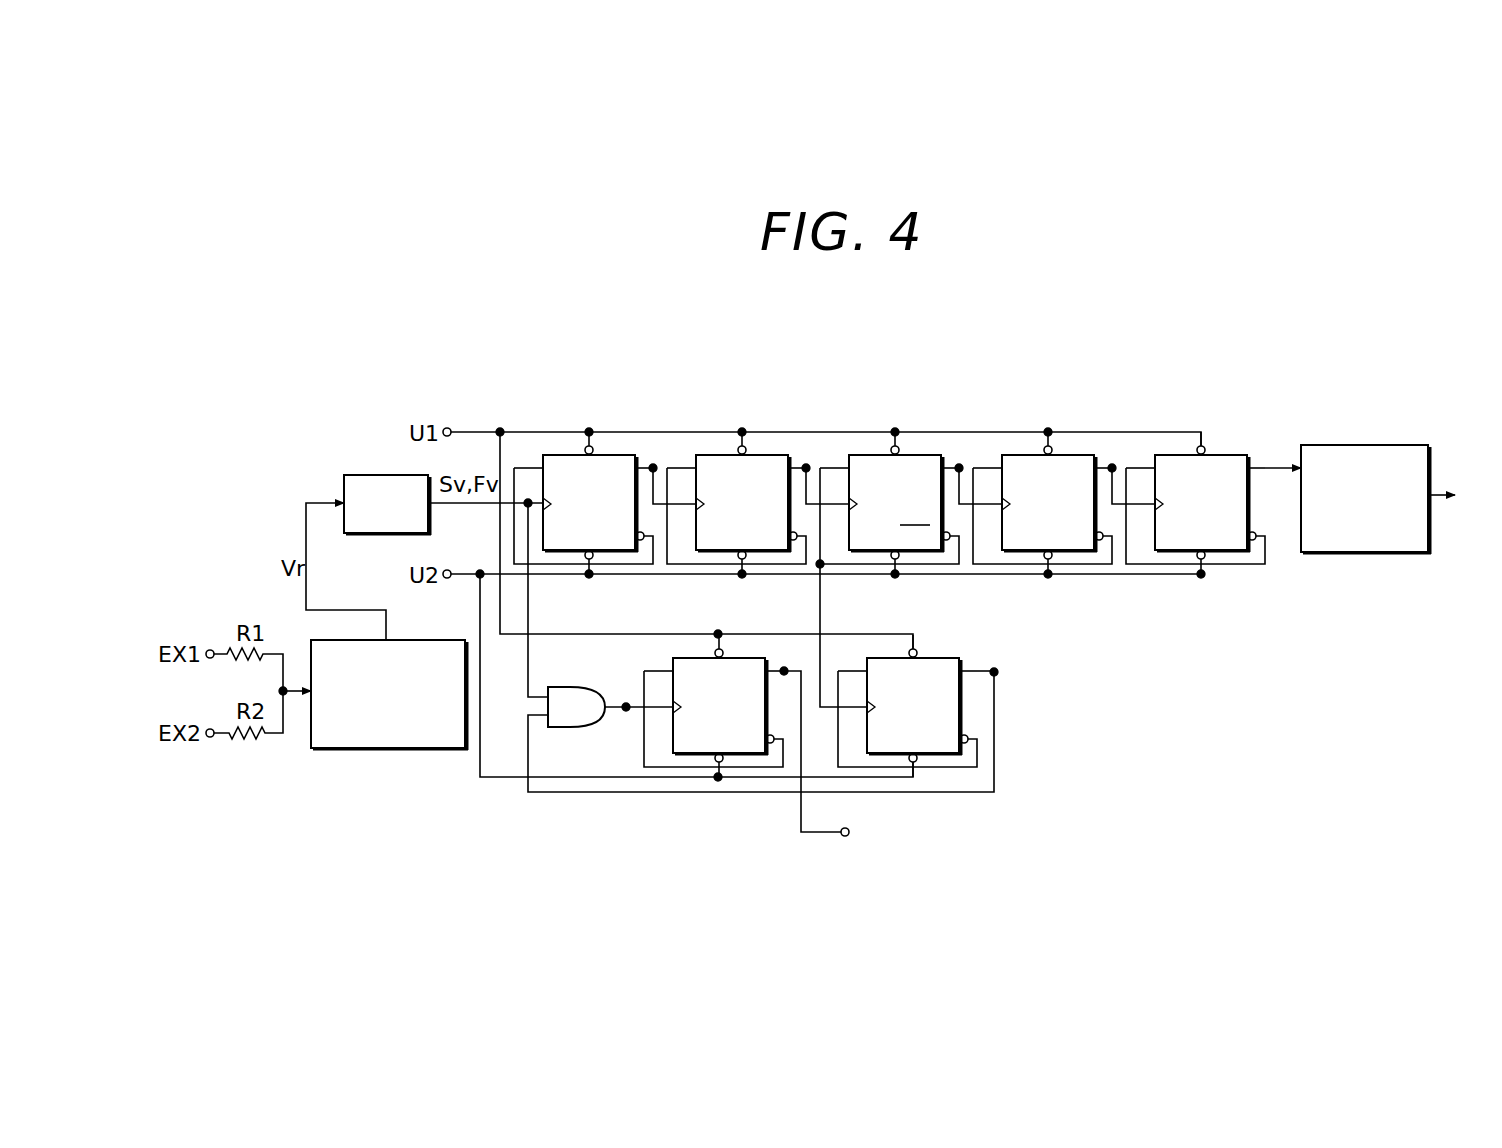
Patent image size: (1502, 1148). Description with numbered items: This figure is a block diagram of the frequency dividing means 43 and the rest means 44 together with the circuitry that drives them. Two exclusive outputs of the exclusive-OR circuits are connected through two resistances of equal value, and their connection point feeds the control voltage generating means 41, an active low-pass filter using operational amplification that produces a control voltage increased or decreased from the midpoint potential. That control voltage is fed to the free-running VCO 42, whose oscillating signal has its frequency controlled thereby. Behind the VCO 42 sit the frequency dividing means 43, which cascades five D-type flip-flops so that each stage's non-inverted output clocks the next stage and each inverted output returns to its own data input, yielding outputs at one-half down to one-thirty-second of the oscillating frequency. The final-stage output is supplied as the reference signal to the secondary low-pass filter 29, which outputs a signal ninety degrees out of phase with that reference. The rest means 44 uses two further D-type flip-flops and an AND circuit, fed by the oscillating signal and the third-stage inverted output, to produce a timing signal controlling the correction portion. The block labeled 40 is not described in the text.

The secondary low-pass filter 29 is at (1363, 435).
The counter (flip-flop chain X1-X5) 40 is at (876, 438).
The control voltage generating means 41 is at (415, 749).
The VCO 42 is at (367, 474).
The frequency dividing means 43 is at (1150, 419).
The rest means 44 is at (966, 643).